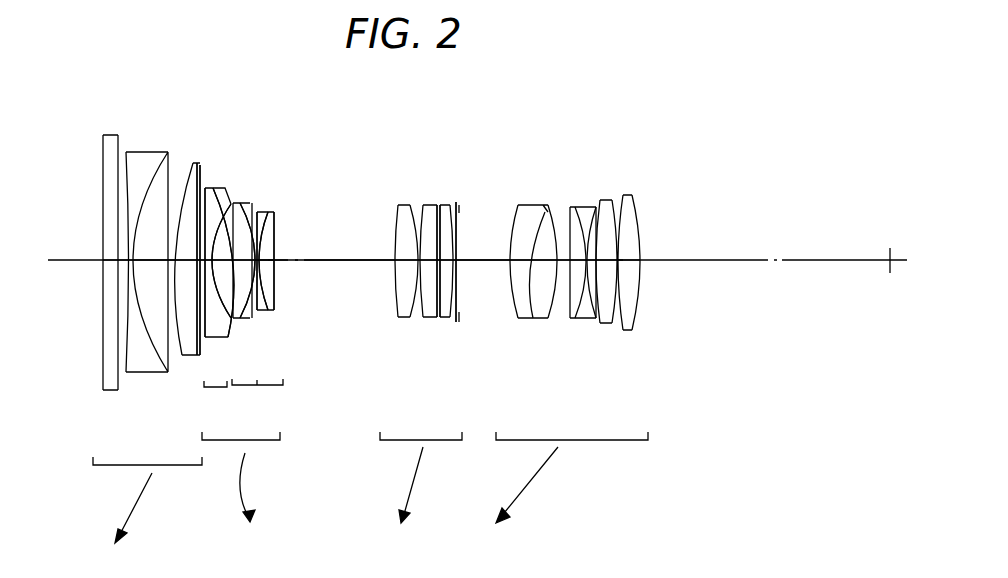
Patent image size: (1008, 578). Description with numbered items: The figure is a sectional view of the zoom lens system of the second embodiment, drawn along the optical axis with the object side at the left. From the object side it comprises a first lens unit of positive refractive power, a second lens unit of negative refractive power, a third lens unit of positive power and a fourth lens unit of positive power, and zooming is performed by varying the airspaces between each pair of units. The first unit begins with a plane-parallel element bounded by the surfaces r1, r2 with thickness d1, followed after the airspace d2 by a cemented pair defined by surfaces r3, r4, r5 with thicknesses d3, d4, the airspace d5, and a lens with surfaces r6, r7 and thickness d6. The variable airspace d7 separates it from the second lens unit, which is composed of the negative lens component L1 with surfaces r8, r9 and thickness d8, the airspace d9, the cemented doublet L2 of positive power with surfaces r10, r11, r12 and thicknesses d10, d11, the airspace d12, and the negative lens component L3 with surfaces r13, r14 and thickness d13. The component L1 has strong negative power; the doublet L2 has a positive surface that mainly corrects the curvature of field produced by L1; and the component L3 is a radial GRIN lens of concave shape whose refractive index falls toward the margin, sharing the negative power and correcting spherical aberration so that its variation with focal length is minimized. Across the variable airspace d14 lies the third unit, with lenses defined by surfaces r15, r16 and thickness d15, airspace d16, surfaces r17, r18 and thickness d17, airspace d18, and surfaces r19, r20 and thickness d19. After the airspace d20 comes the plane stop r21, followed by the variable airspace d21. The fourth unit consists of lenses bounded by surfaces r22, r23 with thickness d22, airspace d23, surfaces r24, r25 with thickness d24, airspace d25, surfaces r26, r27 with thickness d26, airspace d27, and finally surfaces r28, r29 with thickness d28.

The radius of curvature of surface r1 is at (103, 152).
The radius of curvature of surface r2 is at (117, 148).
The radius of curvature of surface r3 is at (127, 152).
The radius of curvature of surface r4 is at (148, 168).
The radius of curvature of surface r5 is at (176, 185).
The radius of curvature of surface r6 is at (193, 168).
The radius of curvature of surface r7 is at (199, 165).
The radius of curvature of surface r8 is at (208, 188).
The radius of curvature of surface r9 is at (222, 190).
The radius of curvature of surface r10 is at (237, 203).
The radius of curvature of surface r11 is at (250, 205).
The radius of curvature of surface r12 is at (260, 212).
The radius of curvature of surface r13 is at (270, 212).
The radius of curvature of surface r14 is at (276, 225).
The radius of curvature of surface r15 is at (396, 210).
The radius of curvature of surface r16 is at (405, 205).
The radius of curvature of surface r17 is at (421, 210).
The radius of curvature of surface r18 is at (431, 205).
The radius of curvature of surface r19 is at (445, 205).
The radius of curvature of surface r20 is at (455, 205).
The stop r21 is at (458, 205).
The radius of curvature of surface r22 is at (512, 210).
The radius of curvature of surface r23 is at (543, 210).
The radius of curvature of surface r24 is at (563, 207).
The radius of curvature of surface r25 is at (590, 207).
The radius of curvature of surface r26 is at (600, 205).
The radius of curvature of surface r27 is at (612, 205).
The radius of curvature of surface r28 is at (624, 200).
The radius of curvature of surface r29 is at (640, 205).
The thickness d1 is at (110, 262).
The airspace d2 is at (117, 258).
The thickness d3 is at (122, 290).
The thickness d4 is at (125, 268).
The airspace d5 is at (131, 262).
The thickness d6 is at (173, 265).
The variable airspace d7 is at (176, 258).
The thickness d8 is at (212, 268).
The airspace d9 is at (236, 266).
The thickness d10 is at (256, 266).
The thickness d11 is at (276, 255).
The airspace d12 is at (274, 266).
The thickness d13 is at (278, 265).
The variable airspace d14 is at (352, 264).
The thickness d15 is at (400, 264).
The airspace d16 is at (410, 266).
The thickness d17 is at (430, 266).
The airspace d18 is at (420, 258).
The thickness d19 is at (446, 266).
The airspace d20 is at (456, 258).
The variable airspace d21 is at (456, 264).
The thickness d22 is at (523, 266).
The airspace d23 is at (545, 266).
The thickness d24 is at (578, 266).
The airspace d25 is at (620, 258).
The thickness d26 is at (600, 266).
The airspace d27 is at (630, 264).
The thickness d28 is at (618, 263).
The negative lens component L1 is at (219, 305).
The cemented doublet L2 is at (242, 313).
The negative lens component L3 is at (266, 317).